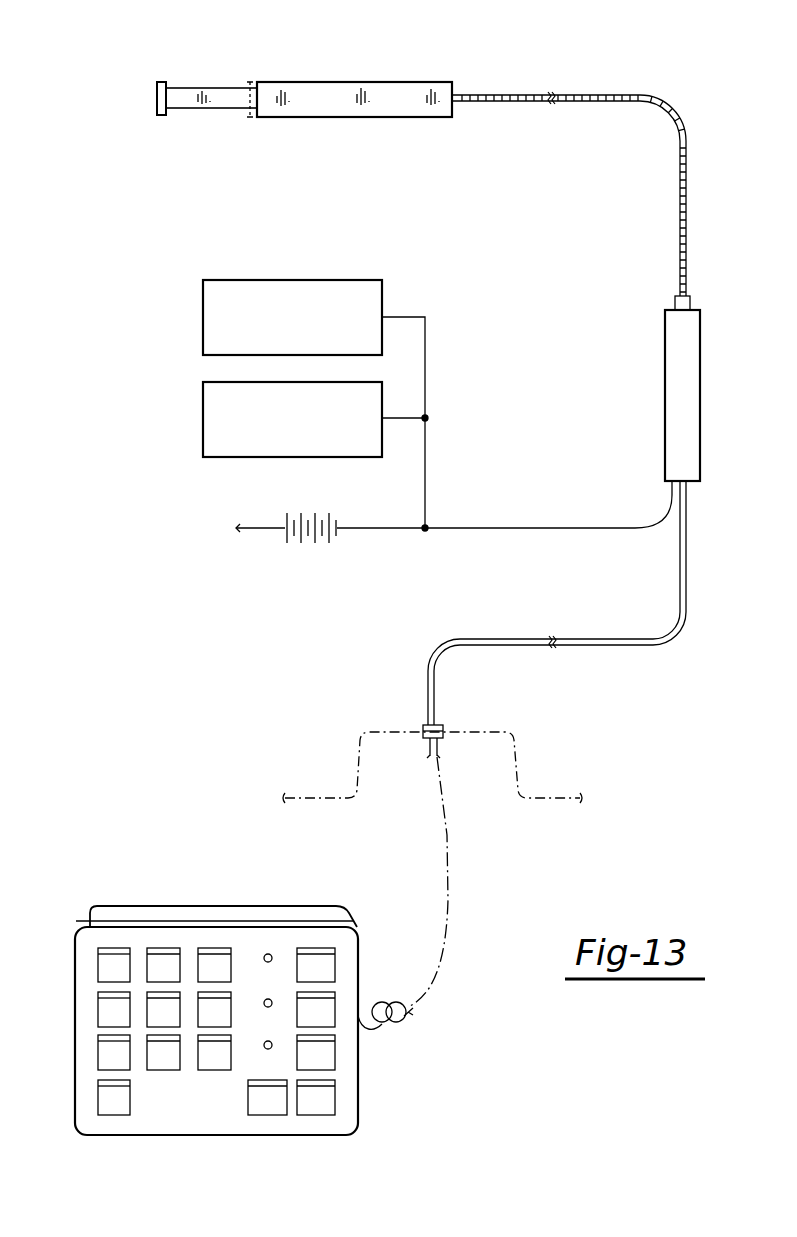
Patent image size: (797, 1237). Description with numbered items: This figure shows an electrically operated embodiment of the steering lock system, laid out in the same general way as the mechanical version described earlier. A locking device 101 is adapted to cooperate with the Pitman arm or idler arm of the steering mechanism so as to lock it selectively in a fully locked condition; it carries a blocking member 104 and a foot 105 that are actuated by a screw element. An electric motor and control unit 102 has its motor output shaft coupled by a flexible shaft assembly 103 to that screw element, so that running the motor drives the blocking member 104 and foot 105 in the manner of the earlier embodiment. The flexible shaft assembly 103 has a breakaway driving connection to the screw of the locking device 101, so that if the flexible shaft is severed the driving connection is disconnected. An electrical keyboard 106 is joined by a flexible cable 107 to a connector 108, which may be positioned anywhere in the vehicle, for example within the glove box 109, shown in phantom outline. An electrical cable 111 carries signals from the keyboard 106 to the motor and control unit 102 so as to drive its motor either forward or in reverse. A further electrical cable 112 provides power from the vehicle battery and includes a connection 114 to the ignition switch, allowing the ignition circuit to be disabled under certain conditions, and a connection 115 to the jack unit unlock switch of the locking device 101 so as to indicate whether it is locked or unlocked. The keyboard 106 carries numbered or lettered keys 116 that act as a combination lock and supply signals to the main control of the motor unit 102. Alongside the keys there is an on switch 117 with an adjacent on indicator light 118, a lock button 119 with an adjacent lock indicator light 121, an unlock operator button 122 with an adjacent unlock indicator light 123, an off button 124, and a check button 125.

The locking device 101 is at (405, 83).
The electric motor and control unit 102 is at (704, 375).
The flexible shaft assembly 103 is at (667, 113).
The blocking member 104 is at (190, 89).
The foot 105 is at (164, 85).
The electrical keyboard 106 is at (164, 897).
The flexible cable 107 is at (454, 906).
The connector 108 is at (444, 728).
The glove box 109 is at (488, 783).
The electrical cable 111 is at (606, 646).
The electrical cable 112 is at (460, 531).
The connection to the ignition circuit 114 is at (430, 418).
The connection to the locking device 115 is at (428, 317).
The numbered or lettered keys 116 is at (98, 1095).
The on switch 117 is at (338, 957).
The on indicator light 118 is at (271, 954).
The lock button 119 is at (338, 1002).
The lock indicator light 121 is at (263, 1049).
The unlock operator button 122 is at (337, 1050).
The unlock indicator light 123 is at (263, 1008).
The off button 124 is at (337, 1095).
The check button 125 is at (280, 1115).